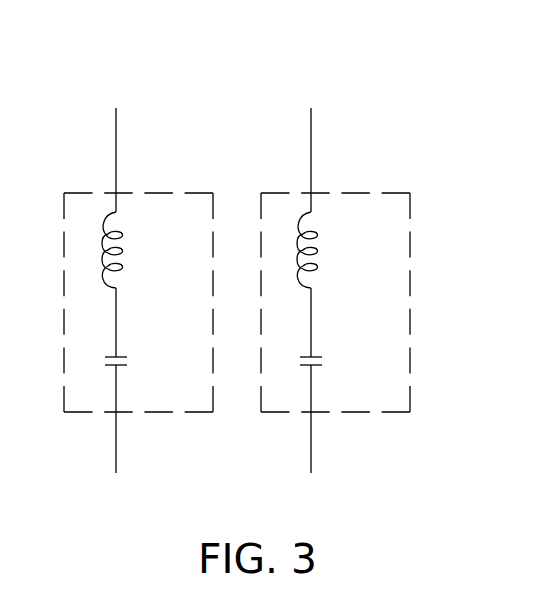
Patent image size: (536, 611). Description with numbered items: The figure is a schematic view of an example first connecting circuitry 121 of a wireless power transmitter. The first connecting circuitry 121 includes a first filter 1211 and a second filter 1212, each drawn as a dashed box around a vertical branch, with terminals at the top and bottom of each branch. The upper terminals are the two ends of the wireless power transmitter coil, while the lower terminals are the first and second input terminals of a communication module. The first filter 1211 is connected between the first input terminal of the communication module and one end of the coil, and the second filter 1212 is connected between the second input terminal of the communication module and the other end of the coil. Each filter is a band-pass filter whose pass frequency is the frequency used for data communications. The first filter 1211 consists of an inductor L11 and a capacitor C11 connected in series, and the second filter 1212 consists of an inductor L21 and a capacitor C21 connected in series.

The first connecting circuitry 121 is at (250, 30).
The first filter 1211 is at (188, 193).
The second filter 1212 is at (383, 193).
The inductor L11 is at (141, 250).
The capacitor C11 is at (145, 364).
The inductor L21 is at (337, 250).
The capacitor C21 is at (341, 364).